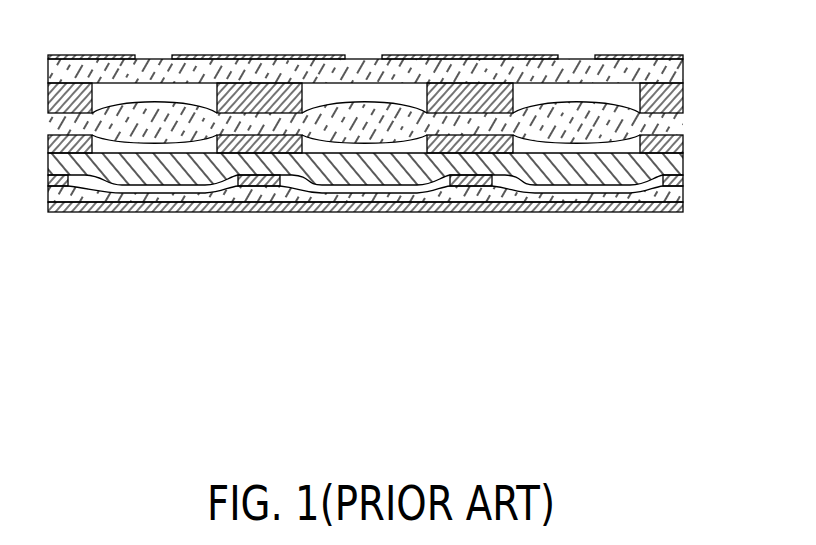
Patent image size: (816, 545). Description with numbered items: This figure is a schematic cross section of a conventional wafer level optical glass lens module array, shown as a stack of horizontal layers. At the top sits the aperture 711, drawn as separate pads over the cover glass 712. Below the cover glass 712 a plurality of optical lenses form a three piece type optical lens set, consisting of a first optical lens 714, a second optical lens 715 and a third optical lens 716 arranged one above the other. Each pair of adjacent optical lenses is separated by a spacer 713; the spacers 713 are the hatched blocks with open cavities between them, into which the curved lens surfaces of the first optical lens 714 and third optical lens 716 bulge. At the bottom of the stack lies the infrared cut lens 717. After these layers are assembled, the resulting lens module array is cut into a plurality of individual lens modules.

The aperture 711 is at (650, 54).
The cover glass 712 is at (672, 70).
The spacer 713 is at (672, 97).
The first optical lens 714 is at (672, 125).
The second optical lens 715 is at (668, 170).
The third optical lens 716 is at (678, 188).
The infrared (IR) cut lens 717 is at (660, 212).